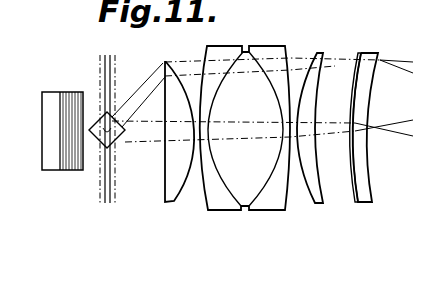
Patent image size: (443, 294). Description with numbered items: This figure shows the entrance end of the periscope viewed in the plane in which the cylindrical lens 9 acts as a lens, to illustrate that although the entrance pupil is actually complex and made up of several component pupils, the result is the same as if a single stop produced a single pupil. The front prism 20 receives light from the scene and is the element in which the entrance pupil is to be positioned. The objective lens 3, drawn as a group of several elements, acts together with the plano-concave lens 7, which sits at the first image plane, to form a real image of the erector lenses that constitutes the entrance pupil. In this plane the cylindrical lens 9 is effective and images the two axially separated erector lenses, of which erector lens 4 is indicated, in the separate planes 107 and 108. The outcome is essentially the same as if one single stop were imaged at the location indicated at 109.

The erector lens 4 is at (1, 81).
The front prism 20 is at (45, 162).
The equivalent single stop image 109 is at (103, 117).
The image plane of first erector lens 107 is at (101, 186).
The image plane of second erector lens 108 is at (116, 190).
The objective lens 3 is at (318, 220).
The cylindrical lens 9 is at (356, 183).
The plano-concave lens 7 is at (373, 197).